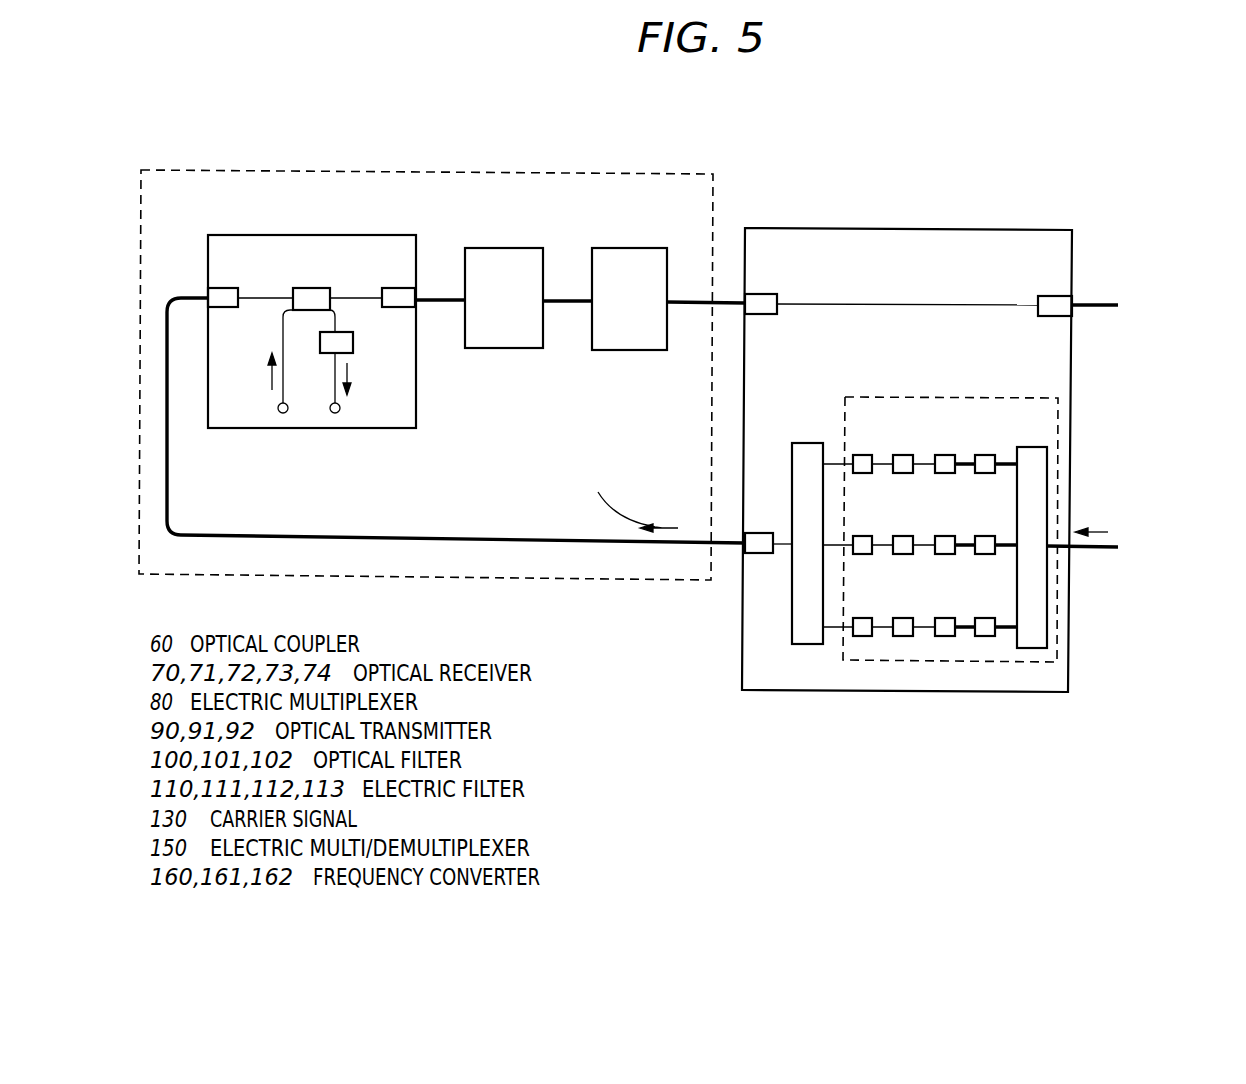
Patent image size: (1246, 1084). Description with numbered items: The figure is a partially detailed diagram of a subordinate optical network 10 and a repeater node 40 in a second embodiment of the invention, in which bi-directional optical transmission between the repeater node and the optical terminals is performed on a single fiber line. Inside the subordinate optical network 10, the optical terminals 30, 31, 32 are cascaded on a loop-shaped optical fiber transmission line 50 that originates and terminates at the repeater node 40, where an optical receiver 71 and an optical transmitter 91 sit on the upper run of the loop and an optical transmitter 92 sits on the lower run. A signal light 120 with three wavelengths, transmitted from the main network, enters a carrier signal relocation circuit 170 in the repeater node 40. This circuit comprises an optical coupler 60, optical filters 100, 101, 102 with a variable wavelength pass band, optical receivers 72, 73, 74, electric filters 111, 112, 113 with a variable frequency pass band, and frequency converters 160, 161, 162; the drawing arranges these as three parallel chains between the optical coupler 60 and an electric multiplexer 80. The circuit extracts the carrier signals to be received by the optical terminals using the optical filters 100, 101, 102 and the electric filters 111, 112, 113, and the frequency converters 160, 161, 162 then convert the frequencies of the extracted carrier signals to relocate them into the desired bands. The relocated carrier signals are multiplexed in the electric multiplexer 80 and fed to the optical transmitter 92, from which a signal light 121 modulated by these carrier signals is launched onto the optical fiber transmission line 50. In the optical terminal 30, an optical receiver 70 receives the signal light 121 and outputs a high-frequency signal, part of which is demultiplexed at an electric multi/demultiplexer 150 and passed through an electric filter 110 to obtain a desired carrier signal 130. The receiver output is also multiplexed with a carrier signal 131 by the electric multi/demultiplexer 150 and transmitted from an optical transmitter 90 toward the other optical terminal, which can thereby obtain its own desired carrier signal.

The subordinate optical network 10 is at (437, 172).
The optical terminal 30 is at (228, 235).
The optical terminal 31 is at (468, 248).
The optical terminal 32 is at (605, 248).
The repeater node 40 is at (864, 228).
The optical fiber transmission line 50 is at (352, 536).
The optical coupler 60 is at (1034, 447).
The optical receiver 70 is at (220, 288).
The optical receiver 71 is at (763, 294).
The optical receiver 72 is at (946, 455).
The optical receiver 73 is at (946, 536).
The optical receiver 74 is at (946, 618).
The electric multiplexer 80 is at (806, 443).
The optical transmitter 90 is at (393, 288).
The optical transmitter 91 is at (1052, 296).
The optical transmitter 92 is at (760, 533).
The optical filter 100 is at (986, 455).
The optical filter 101 is at (986, 536).
The optical filter 102 is at (986, 618).
The electric filter 110 is at (353, 342).
The electric filter 111 is at (904, 455).
The electric filter 112 is at (904, 536).
The electric filter 113 is at (904, 618).
The signal light 120 is at (1098, 531).
The signal light 121 is at (618, 492).
The carrier signal 130 is at (352, 370).
The carrier signal 131 is at (266, 373).
The electric multi/demultiplexer 150 is at (310, 288).
The frequency converter 160 is at (864, 455).
The frequency converter 161 is at (864, 536).
The frequency converter 162 is at (864, 618).
The carrier signal relocation circuit 170 is at (847, 397).